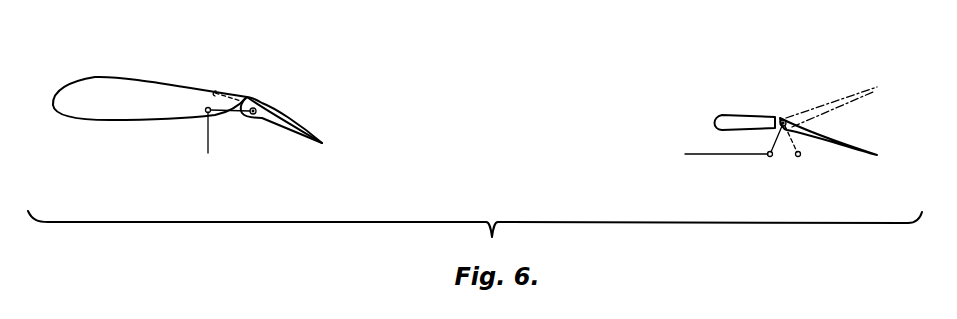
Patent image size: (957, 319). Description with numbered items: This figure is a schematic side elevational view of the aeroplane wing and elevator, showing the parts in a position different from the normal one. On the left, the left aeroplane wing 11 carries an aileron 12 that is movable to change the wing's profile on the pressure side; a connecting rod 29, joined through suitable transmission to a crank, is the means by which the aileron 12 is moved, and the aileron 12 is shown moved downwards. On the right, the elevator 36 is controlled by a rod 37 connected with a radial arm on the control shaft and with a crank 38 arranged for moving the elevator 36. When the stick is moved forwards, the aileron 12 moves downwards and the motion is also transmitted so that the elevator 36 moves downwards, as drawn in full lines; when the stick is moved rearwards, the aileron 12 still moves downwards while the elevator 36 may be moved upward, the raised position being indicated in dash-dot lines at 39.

The left aeroplane wing 11 is at (160, 87).
The aileron 12 is at (278, 117).
The connecting rod 29 is at (208, 139).
The elevator 36 is at (867, 152).
The rod 37 is at (715, 154).
The crank 38 is at (774, 156).
The upward elevator position 39 is at (843, 98).